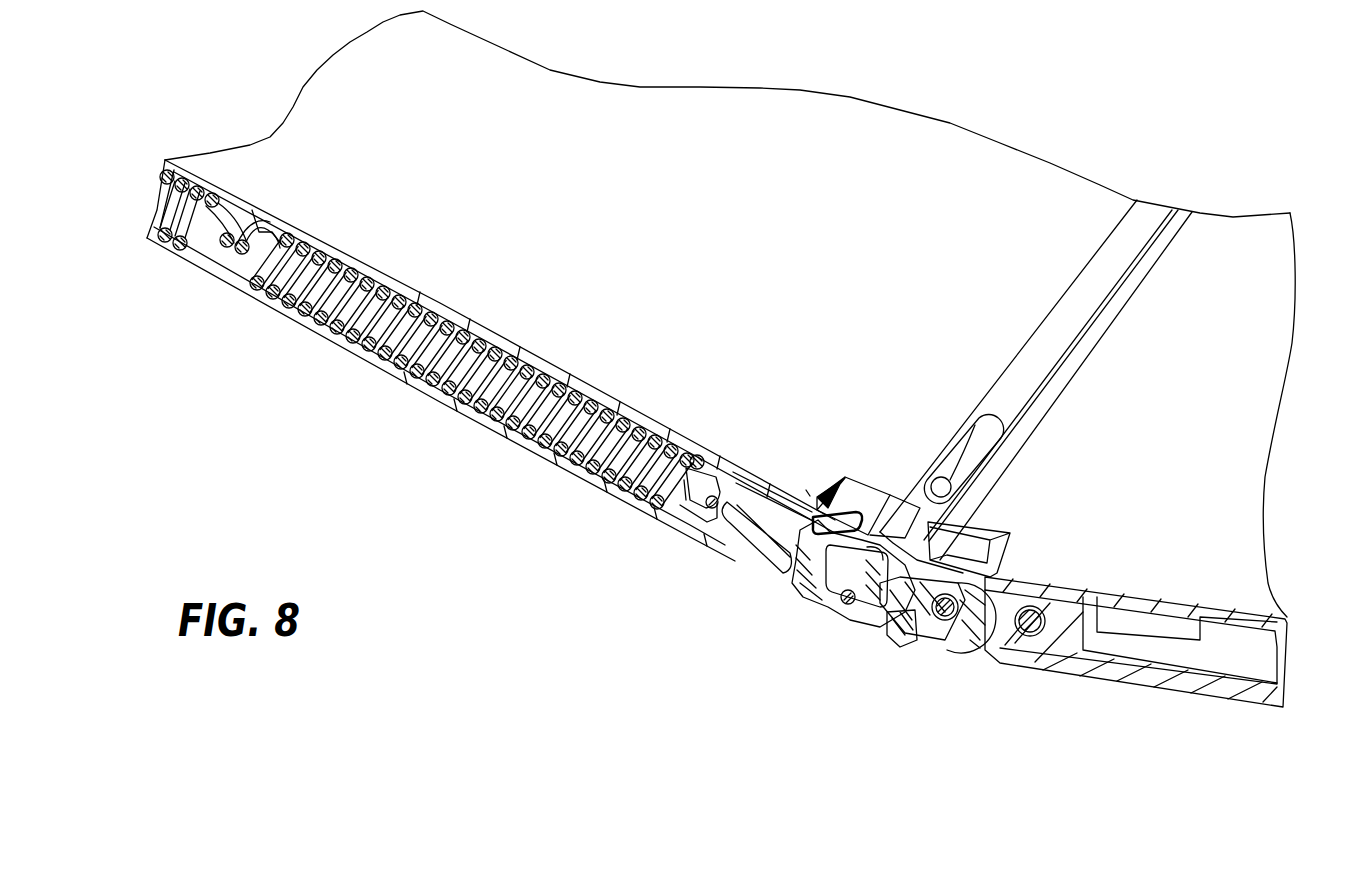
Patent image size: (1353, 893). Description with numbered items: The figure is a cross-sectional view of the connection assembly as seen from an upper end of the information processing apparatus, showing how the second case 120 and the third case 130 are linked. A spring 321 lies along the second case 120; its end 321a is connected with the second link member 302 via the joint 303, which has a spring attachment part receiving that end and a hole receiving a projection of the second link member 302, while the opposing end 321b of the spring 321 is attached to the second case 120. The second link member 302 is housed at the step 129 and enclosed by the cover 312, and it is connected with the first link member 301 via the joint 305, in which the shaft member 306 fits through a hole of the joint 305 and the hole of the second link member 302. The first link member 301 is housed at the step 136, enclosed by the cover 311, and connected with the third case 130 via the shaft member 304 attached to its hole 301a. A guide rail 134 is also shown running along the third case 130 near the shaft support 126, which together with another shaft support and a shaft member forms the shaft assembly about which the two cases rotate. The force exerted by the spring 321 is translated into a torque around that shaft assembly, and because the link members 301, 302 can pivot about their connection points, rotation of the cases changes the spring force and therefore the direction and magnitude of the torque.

The second case 120 is at (935, 140).
The third case 130 is at (1255, 248).
The guide rail 134 is at (1000, 442).
The shaft support 126 is at (940, 470).
The step 129 is at (808, 492).
The step 136 is at (1020, 537).
The first link member 301 is at (913, 603).
The hole 301a is at (963, 653).
The second link member 302 is at (777, 540).
The joint 303 is at (720, 518).
The shaft member 304 is at (945, 620).
The joint 305 is at (865, 605).
The shaft member 306 is at (843, 623).
The cover 311 is at (985, 535).
The cover 312 is at (865, 493).
The spring 321 is at (352, 358).
The end of the spring 321a is at (700, 520).
The opposing end of the spring 321b is at (240, 215).